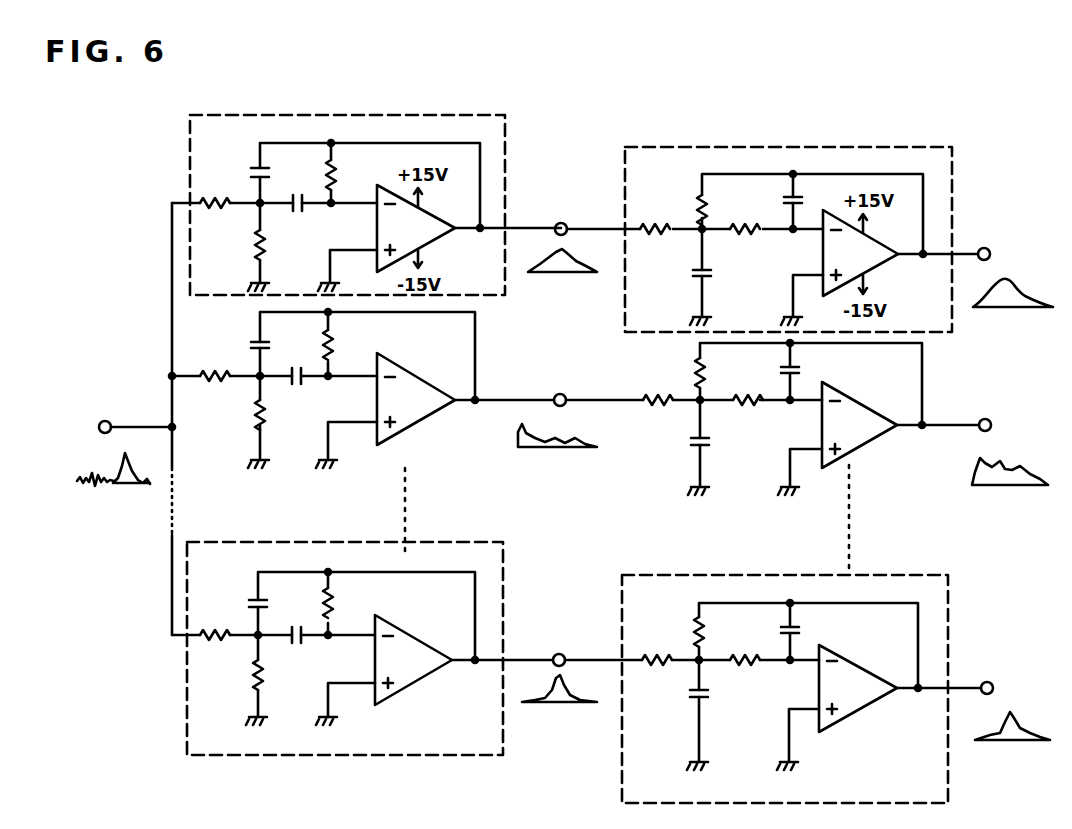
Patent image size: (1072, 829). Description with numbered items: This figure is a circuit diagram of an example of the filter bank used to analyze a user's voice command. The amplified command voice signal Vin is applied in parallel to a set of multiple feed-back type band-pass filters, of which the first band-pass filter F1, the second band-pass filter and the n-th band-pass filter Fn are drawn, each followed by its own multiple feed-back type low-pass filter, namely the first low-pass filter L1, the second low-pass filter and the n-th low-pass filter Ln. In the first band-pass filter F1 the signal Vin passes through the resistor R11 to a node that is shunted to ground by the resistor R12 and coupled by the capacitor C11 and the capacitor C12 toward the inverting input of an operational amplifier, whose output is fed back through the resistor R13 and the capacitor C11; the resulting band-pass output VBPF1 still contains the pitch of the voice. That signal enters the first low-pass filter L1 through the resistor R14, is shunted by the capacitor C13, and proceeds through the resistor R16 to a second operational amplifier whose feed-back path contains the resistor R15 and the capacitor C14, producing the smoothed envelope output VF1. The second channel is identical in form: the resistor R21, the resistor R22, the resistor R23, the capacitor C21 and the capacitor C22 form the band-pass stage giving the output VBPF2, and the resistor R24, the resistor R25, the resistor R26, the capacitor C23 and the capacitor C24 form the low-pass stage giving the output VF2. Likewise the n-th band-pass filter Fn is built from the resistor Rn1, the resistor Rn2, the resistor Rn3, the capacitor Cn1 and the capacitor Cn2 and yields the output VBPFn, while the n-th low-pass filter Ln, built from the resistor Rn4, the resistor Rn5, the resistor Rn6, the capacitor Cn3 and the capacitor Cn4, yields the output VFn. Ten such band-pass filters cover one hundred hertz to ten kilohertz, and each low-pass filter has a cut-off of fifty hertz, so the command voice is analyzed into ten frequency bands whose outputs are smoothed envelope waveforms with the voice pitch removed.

The command voice input signal Vin is at (126, 435).
The first band-pass filter F1 is at (425, 115).
The resistor R11 is at (214, 212).
The resistor R12 is at (266, 250).
The resistor R13 is at (336, 180).
The capacitor C11 is at (250, 171).
The capacitor C12 is at (297, 212).
The band-pass filter output signal VBPF1 is at (584, 223).
The first low-pass filter L1 is at (792, 147).
The resistor R14 is at (655, 236).
The resistor R15 is at (696, 204).
The resistor R16 is at (752, 238).
The capacitor C13 is at (710, 274).
The capacitor C14 is at (802, 201).
The filter bank output signal VF1 is at (1013, 255).
The resistor R21 is at (212, 385).
The resistor R22 is at (265, 418).
The resistor R23 is at (334, 348).
The capacitor C21 is at (250, 345).
The capacitor C22 is at (296, 385).
The band-pass filter output signal VBPF2 is at (580, 397).
The resistor R24 is at (655, 408).
The resistor R25 is at (694, 370).
The resistor R26 is at (740, 396).
The capacitor C23 is at (710, 440).
The capacitor C24 is at (800, 371).
The filter bank output signal VF2 is at (1004, 433).
The n-th band-pass filter Fn is at (460, 542).
The resistor Rn1 is at (214, 645).
The resistor Rn2 is at (263, 682).
The resistor Rn3 is at (334, 610).
The capacitor Cn1 is at (248, 603).
The capacitor Cn2 is at (296, 645).
The band-pass filter output signal VBPFn is at (582, 653).
The n-th low-pass filter Ln is at (858, 575).
The resistor Rn4 is at (656, 668).
The resistor Rn5 is at (694, 636).
The resistor Rn6 is at (740, 656).
The capacitor Cn3 is at (710, 692).
The capacitor Cn4 is at (800, 630).
The filter bank output signal VFn is at (1011, 690).